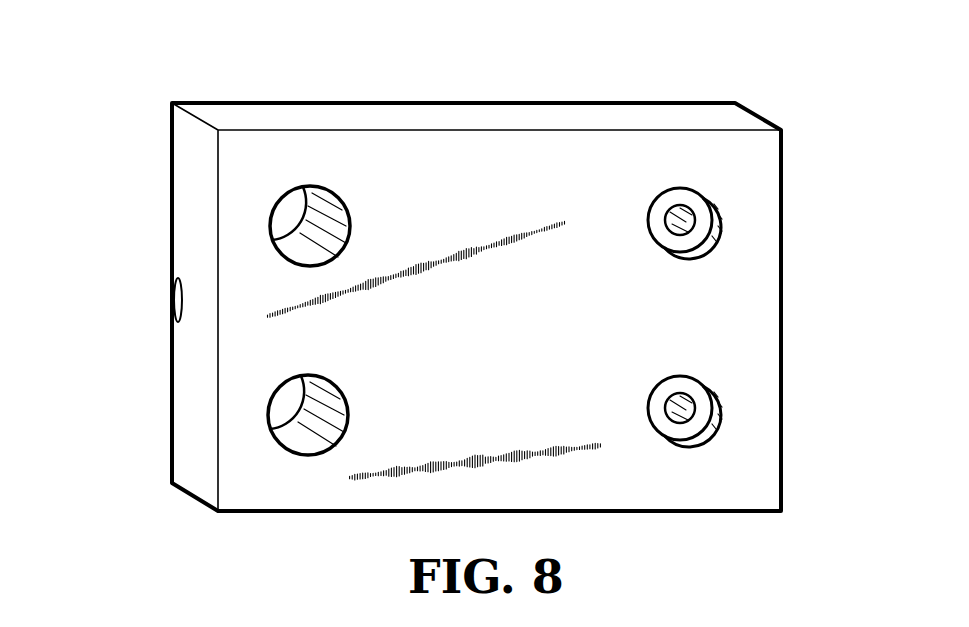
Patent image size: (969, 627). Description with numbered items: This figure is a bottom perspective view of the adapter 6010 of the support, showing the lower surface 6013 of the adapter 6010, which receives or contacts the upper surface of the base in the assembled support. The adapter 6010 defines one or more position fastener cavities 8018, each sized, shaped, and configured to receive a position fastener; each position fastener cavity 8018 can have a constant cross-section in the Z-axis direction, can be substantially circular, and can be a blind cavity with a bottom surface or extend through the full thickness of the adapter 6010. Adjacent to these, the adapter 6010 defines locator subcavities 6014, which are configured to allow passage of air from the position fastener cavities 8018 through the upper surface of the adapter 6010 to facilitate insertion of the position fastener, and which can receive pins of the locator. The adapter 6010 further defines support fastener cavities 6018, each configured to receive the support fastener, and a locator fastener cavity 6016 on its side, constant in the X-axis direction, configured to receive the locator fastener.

The adapter 6010 is at (547, 275).
The lower surface 6013 is at (752, 315).
The locator subcavities 6014 is at (683, 207).
The locator fastener cavities 6016 is at (178, 293).
The support fastener cavities 6018 is at (323, 220).
The position fastener cavities 8018 is at (730, 247).